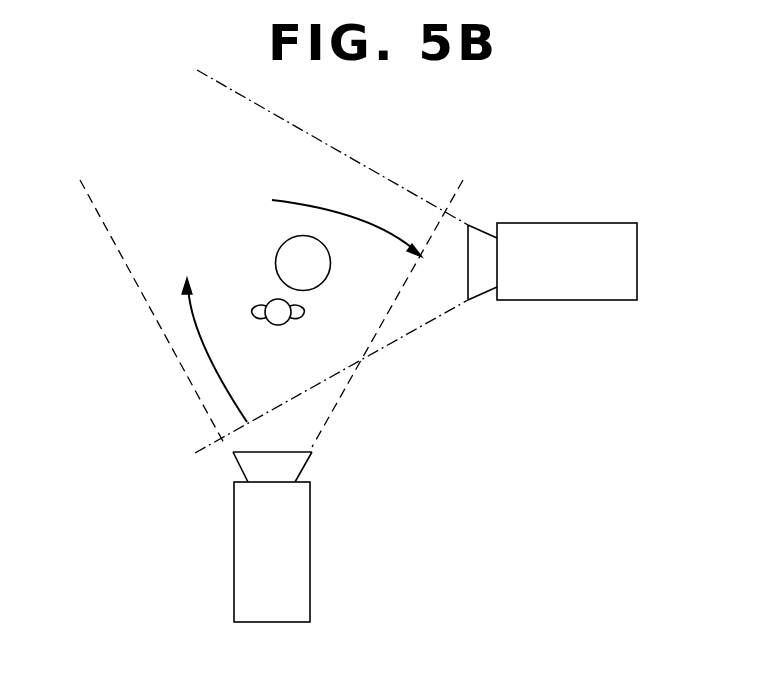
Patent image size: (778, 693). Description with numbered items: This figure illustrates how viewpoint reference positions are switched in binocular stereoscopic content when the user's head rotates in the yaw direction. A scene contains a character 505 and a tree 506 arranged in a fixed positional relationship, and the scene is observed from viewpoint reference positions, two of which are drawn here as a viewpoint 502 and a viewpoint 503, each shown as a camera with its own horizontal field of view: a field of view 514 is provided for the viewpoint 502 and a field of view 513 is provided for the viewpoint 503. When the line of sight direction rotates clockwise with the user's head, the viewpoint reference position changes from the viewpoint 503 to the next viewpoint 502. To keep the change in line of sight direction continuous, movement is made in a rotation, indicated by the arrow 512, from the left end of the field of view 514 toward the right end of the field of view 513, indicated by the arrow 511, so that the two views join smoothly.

The viewpoint 502 is at (637, 255).
The viewpoint 503 is at (310, 562).
The character 505 is at (256, 310).
The tree 506 is at (331, 272).
The arrow 511 is at (285, 198).
The arrow 512 is at (230, 397).
The field of view 513 is at (308, 433).
The field of view 514 is at (463, 298).